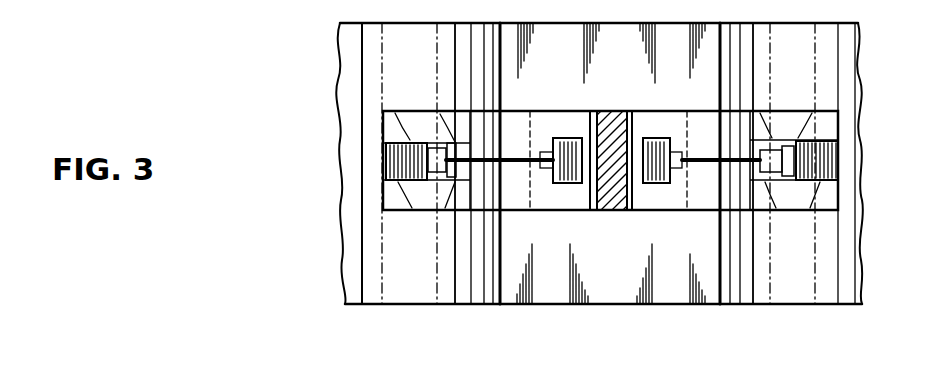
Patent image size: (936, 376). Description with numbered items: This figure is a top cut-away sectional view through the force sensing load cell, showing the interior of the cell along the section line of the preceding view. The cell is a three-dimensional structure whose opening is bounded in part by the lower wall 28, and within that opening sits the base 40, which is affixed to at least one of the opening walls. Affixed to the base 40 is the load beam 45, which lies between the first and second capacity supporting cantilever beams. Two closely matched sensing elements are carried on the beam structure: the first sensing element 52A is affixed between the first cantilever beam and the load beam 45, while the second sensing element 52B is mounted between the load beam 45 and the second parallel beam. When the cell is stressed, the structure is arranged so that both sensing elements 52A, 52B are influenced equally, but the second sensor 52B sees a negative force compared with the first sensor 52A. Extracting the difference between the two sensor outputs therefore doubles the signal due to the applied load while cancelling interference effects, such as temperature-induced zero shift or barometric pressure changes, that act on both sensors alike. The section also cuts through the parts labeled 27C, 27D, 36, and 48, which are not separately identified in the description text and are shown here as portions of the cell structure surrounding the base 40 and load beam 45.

The support wall 27C is at (457, 284).
The support wall 27D is at (745, 284).
The lower wall 28 is at (618, 288).
The spacer block 36 is at (616, 206).
The base 40 is at (793, 118).
The load beam 45 is at (566, 111).
The cover plate 48 is at (831, 128).
The first sensing element 52A is at (412, 120).
The second sensing element 52B is at (838, 169).